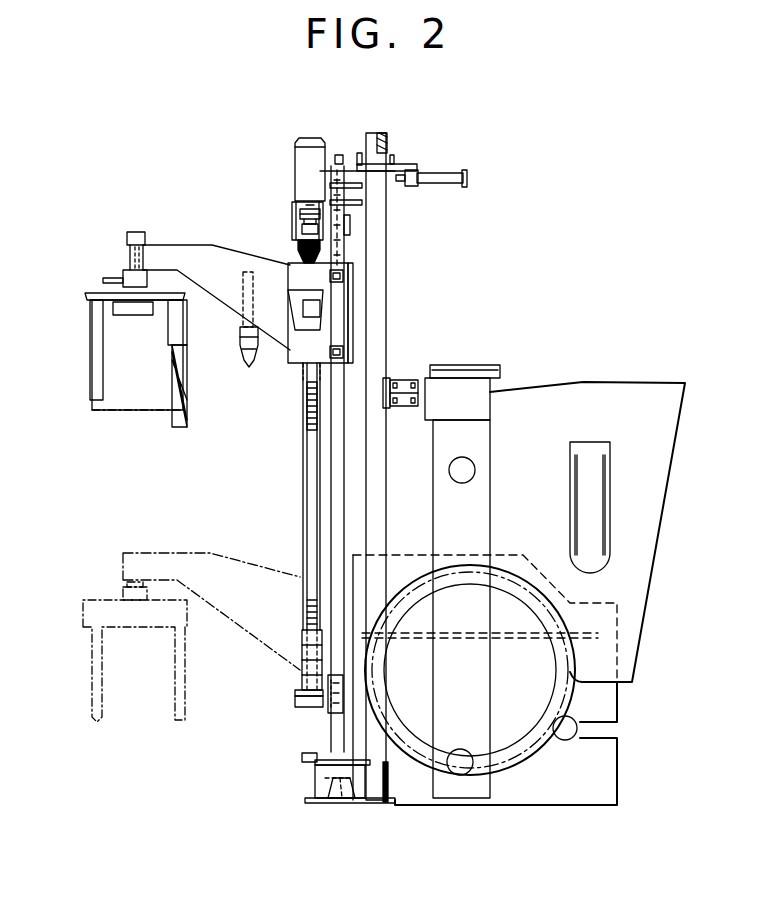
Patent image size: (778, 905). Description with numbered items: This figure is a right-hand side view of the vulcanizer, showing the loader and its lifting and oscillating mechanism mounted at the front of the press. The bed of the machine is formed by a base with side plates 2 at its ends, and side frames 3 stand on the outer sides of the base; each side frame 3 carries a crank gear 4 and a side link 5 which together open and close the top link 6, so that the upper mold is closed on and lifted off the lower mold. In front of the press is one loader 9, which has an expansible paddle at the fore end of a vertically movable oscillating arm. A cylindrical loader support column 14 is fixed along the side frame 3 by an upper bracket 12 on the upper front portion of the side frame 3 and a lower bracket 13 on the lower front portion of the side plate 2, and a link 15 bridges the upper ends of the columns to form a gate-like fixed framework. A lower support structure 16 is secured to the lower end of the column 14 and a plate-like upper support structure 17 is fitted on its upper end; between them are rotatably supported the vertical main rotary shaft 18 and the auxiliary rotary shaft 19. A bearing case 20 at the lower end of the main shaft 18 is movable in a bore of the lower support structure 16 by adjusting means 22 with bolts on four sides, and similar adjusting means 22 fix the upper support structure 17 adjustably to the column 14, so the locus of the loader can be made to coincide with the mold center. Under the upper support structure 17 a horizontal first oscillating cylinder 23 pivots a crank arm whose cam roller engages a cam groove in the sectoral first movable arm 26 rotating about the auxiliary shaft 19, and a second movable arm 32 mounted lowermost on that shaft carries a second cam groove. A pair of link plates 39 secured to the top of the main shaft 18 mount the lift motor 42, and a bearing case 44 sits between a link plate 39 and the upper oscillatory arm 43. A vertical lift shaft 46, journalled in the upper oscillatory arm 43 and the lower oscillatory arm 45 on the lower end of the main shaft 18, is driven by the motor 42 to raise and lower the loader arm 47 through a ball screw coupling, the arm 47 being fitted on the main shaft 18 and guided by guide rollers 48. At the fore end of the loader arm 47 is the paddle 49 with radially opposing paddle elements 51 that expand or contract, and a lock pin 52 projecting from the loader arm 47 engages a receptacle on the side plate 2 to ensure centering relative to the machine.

The side plate 2 is at (617, 776).
The side frame 3 is at (650, 589).
The crank gear 4 is at (505, 770).
The side link 5 is at (490, 515).
The top link 6 is at (478, 376).
The loader 9 is at (283, 256).
The upper bracket 12 is at (405, 380).
The lower bracket 13 is at (390, 778).
The loader support column 14 is at (366, 553).
The link 15 is at (385, 137).
The lower support structure 16 is at (315, 786).
The upper support structure 17 is at (418, 166).
The main rotary shaft 18 is at (330, 436).
The auxiliary rotary shaft 19 is at (366, 221).
The bearing case 20 is at (347, 803).
The adjusting means 22 is at (359, 154).
The first oscillating cylinder 23 is at (468, 176).
The first movable arm 26 is at (340, 184).
The second movable arm 32 is at (340, 201).
The link plate 39 is at (350, 228).
The lift motor 42 is at (305, 157).
The upper oscillatory arm 43 is at (346, 256).
The bearing case 44 is at (306, 232).
The lower oscillatory arm 45 is at (318, 705).
The lift shaft 46 is at (310, 488).
The loader arm 47 is at (211, 245).
The guide roller 48 is at (343, 278).
The paddle 49 is at (86, 332).
The paddle element 51 is at (100, 357).
The lock pin 52 is at (247, 370).